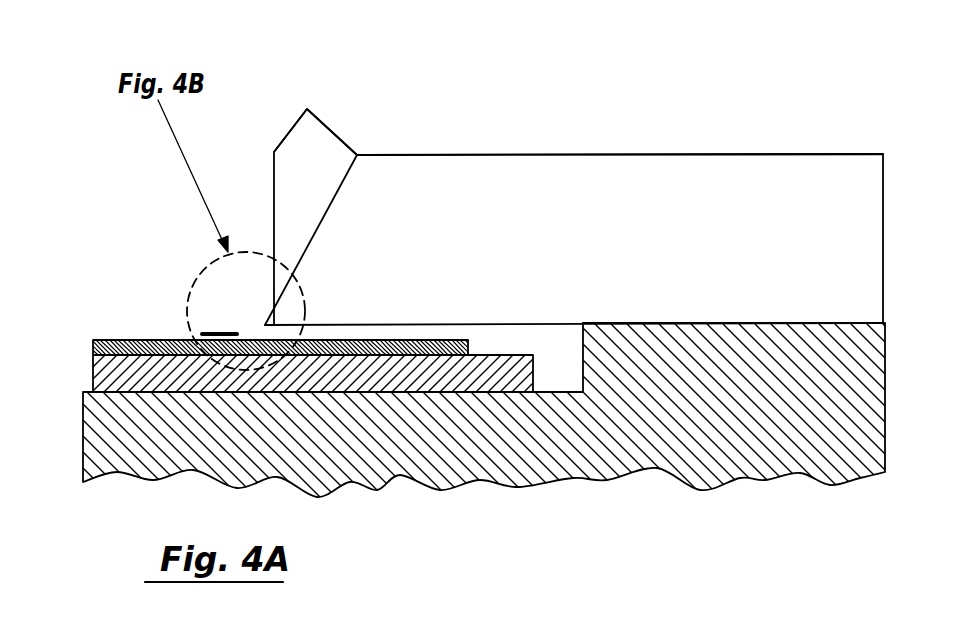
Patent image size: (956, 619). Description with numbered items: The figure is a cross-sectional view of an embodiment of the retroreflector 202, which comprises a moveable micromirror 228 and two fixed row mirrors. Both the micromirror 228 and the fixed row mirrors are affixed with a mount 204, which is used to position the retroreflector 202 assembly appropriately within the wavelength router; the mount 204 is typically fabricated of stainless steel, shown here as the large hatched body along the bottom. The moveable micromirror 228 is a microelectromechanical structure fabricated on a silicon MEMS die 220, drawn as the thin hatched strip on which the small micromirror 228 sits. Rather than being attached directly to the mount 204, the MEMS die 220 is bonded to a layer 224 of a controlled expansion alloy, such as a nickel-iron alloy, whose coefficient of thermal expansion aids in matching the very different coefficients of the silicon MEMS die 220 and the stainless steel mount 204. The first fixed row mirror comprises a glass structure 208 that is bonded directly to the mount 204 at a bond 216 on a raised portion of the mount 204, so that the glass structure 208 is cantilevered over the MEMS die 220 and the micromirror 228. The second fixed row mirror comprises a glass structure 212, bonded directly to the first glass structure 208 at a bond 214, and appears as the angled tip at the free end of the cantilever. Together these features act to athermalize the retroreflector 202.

The retroreflector 202 is at (583, 127).
The mount 204 is at (782, 435).
The glass structure 208 is at (748, 153).
The glass structure 212 is at (327, 129).
The bond 214 is at (320, 223).
The bond 216 is at (752, 322).
The MEMS die 220 is at (127, 340).
The layer of controlled expansion alloy 224 is at (92, 377).
The moveable micromirror 228 is at (215, 331).